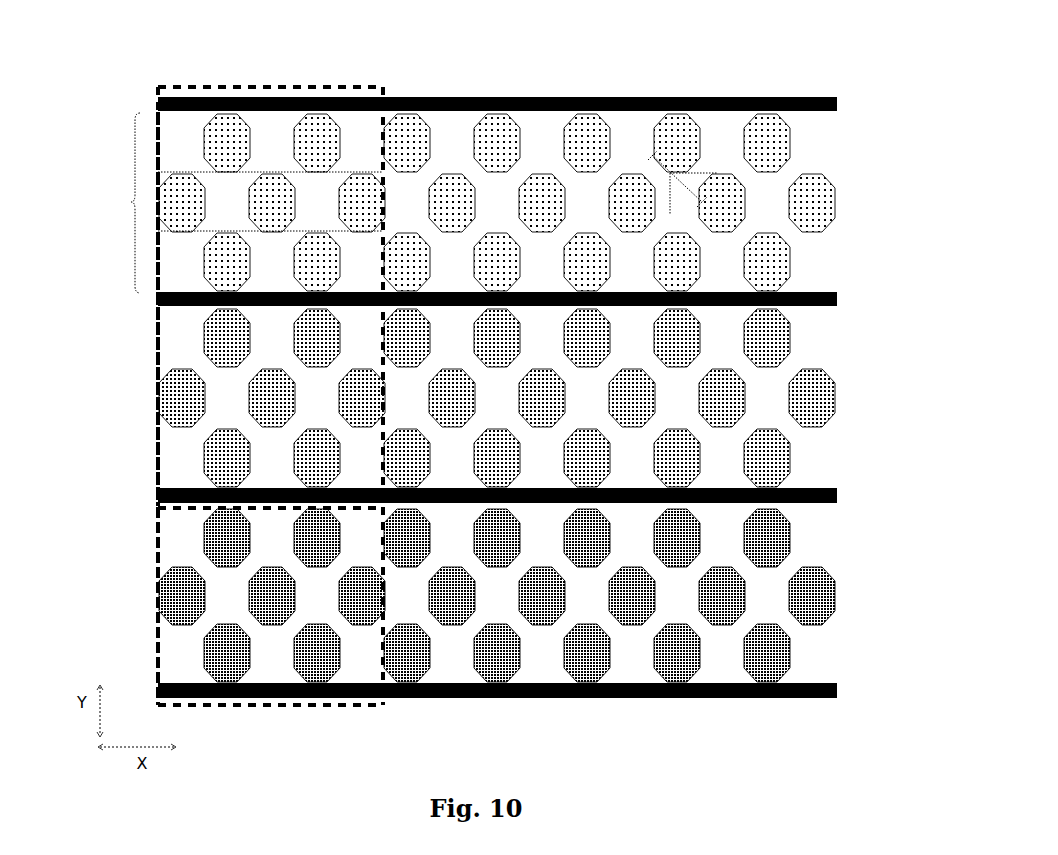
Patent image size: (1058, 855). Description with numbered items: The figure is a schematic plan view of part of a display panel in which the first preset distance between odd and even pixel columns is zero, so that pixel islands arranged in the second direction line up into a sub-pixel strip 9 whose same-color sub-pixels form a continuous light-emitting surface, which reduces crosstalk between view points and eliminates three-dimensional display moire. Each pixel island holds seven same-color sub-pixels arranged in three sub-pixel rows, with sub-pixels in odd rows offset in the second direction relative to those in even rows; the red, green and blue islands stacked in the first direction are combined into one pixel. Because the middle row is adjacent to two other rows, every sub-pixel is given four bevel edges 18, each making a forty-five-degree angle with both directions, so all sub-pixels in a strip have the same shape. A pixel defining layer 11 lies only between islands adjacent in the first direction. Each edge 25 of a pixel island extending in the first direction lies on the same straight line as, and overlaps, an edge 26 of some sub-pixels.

The sub-pixel strip 9 is at (124, 203).
The pixel defining layer 11 is at (828, 697).
The bevel edge 18 is at (643, 230).
The edge of the pixel island 25 is at (157, 135).
The edge of the sub-pixel 26 is at (158, 198).